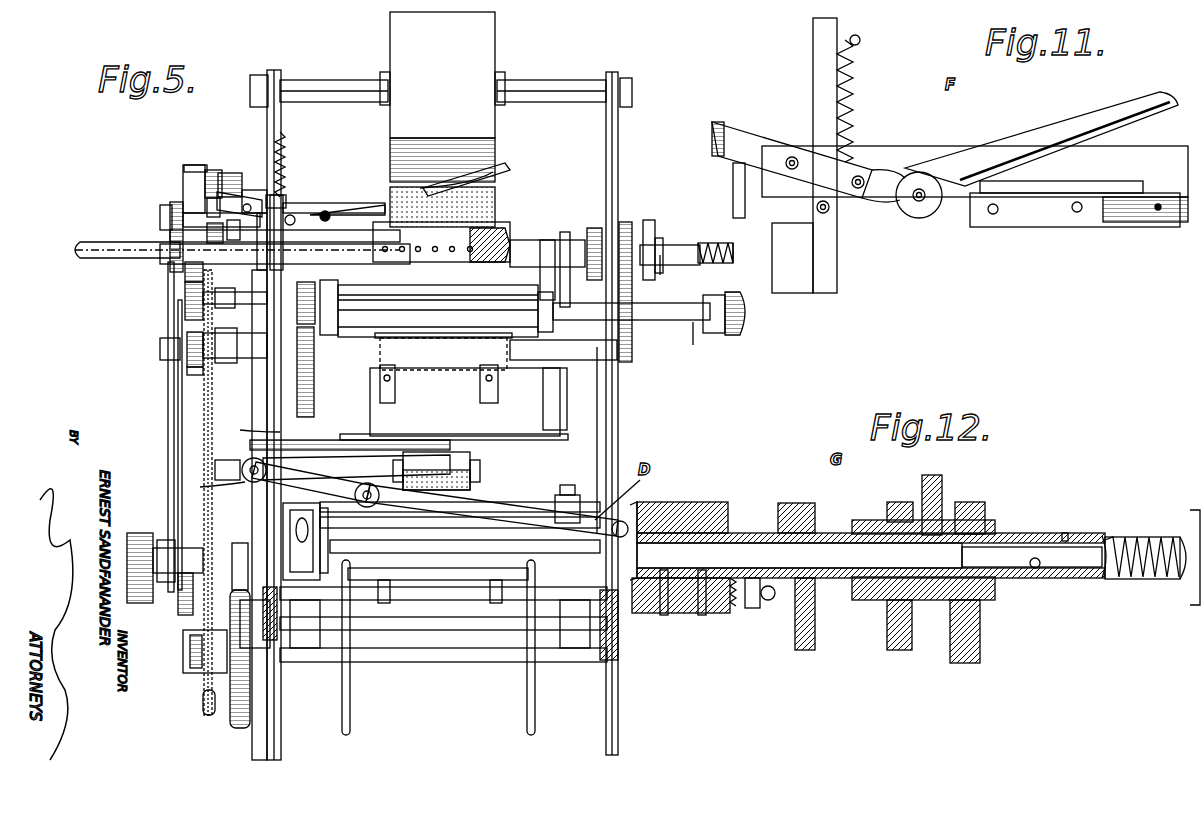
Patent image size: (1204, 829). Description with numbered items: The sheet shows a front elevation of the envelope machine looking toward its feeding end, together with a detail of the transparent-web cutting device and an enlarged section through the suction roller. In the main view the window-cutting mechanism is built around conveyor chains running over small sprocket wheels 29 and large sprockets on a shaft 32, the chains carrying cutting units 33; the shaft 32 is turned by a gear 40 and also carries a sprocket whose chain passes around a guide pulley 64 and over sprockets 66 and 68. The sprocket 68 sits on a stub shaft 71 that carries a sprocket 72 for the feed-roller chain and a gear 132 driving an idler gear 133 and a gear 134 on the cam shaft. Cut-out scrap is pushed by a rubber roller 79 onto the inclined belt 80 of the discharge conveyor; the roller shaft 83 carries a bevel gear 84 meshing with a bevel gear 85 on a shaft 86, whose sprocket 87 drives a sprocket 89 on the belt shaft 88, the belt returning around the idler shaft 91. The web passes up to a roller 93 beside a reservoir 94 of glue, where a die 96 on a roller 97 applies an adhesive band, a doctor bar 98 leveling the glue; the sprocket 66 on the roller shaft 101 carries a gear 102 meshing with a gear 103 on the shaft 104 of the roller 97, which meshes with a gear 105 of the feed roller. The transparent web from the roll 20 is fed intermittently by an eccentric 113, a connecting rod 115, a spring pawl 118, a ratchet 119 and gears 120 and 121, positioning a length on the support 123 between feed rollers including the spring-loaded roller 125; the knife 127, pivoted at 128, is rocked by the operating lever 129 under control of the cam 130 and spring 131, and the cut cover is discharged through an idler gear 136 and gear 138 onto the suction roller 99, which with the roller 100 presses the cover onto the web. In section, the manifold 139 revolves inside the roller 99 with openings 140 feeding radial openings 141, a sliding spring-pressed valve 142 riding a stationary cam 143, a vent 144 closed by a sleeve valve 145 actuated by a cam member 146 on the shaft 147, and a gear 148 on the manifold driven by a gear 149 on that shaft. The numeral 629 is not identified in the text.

In FIG. 5, the roll 20 is at (480, 42).
In FIG. 5, the small sprocket wheels 29 is at (350, 722).
In FIG. 5, the shaft 32 is at (422, 662).
In FIG. 5, the cutting units 33 is at (438, 574).
In FIG. 5, the gear 40 is at (239, 728).
In FIG. 5, the guide pulley 64 is at (195, 610).
In FIG. 5, the sprocket 66 is at (185, 305).
In FIG. 5, the sprocket 68 is at (215, 360).
In FIG. 5, the stub shaft 71 is at (160, 348).
In FIG. 5, the sprocket 72 is at (185, 345).
In FIG. 5, the roller 79 is at (460, 458).
In FIG. 5, the inclined belt 80 is at (500, 505).
In FIG. 5, the shaft 83 is at (350, 470).
In FIG. 5, the bevel gear 84 is at (245, 460).
In FIG. 5, the bevel gear 85 is at (255, 425).
In FIG. 5, the shaft 86 is at (215, 468).
In FIG. 5, the sprocket 87 is at (211, 488).
In FIG. 5, the shaft 88 is at (347, 540).
In FIG. 5, the sprocket 89 is at (316, 541).
In FIG. 5, the idler shaft 91 is at (620, 520).
In FIG. 5, the roller 93 is at (445, 311).
In FIG. 5, the reservoir 94 is at (525, 406).
In FIG. 5, the die 96 is at (440, 340).
In FIG. 5, the roller 97 is at (478, 338).
In FIG. 5, the doctor bar 98 is at (438, 375).
In FIG. 5, the roller 99 is at (438, 291).
In FIG. 12, the roller 99 is at (712, 502).
In FIG. 5, the roller 100 is at (340, 292).
In FIG. 5, the shaft 101 is at (600, 320).
In FIG. 5, the gear 102 is at (304, 293).
In FIG. 5, the gear 103 is at (360, 320).
In FIG. 5, the shaft 104 is at (398, 320).
In FIG. 5, the gear 105 is at (297, 400).
In FIG. 5, the eccentric 113 is at (140, 603).
In FIG. 5, the connecting rod 115 is at (168, 444).
In FIG. 5, the spring pawl 118 is at (215, 170).
In FIG. 5, the ratchet 119 is at (205, 185).
In FIG. 5, the gear 120 is at (248, 190).
In FIG. 5, the gear 121 is at (296, 205).
In FIG. 11, the support 123 is at (1035, 227).
In FIG. 5, the feed roller 125 is at (500, 178).
In FIG. 5, the knife 127 is at (480, 178).
In FIG. 11, the knife 127 is at (1030, 140).
In FIG. 11, the pivot 128 is at (920, 215).
In FIG. 5, the operating lever 129 is at (232, 192).
In FIG. 11, the operating lever 129 is at (827, 173).
In FIG. 5, the cam 130 is at (160, 222).
In FIG. 11, the cam 130 is at (733, 185).
In FIG. 5, the spring 131 is at (292, 172).
In FIG. 11, the spring 131 is at (860, 100).
In FIG. 5, the gear 132 is at (193, 370).
In FIG. 5, the idler gear 133 is at (185, 283).
In FIG. 5, the gear 134 is at (170, 245).
In FIG. 5, the idler gear 136 is at (660, 242).
In FIG. 5, the gear 138 is at (652, 220).
In FIG. 5, the manifold 139 is at (520, 222).
In FIG. 12, the manifold 139 is at (745, 533).
In FIG. 5, the openings 140 is at (495, 240).
In FIG. 12, the openings 140 is at (670, 565).
In FIG. 5, the radial openings 141 is at (436, 248).
In FIG. 12, the radial openings 141 is at (702, 615).
In FIG. 12, the sliding spring-pressed valve 142 is at (720, 615).
In FIG. 12, the stationary cam 143 is at (785, 610).
In FIG. 5, the vent 144 is at (675, 261).
In FIG. 12, the vent 144 is at (1035, 568).
In FIG. 5, the spring-pressed sleeve valve 145 is at (735, 250).
In FIG. 12, the spring-pressed sleeve valve 145 is at (1060, 533).
In FIG. 5, the cam member 146 is at (740, 292).
In FIG. 12, the cam member 146 is at (1175, 585).
In FIG. 5, the shaft 147 is at (714, 339).
In FIG. 12, the gear 148 is at (895, 502).
In FIG. 5, the gear 149 is at (615, 365).
In FIG. 12, the gear 149 is at (898, 645).
In FIG. 5, the chain end 629 is at (203, 698).